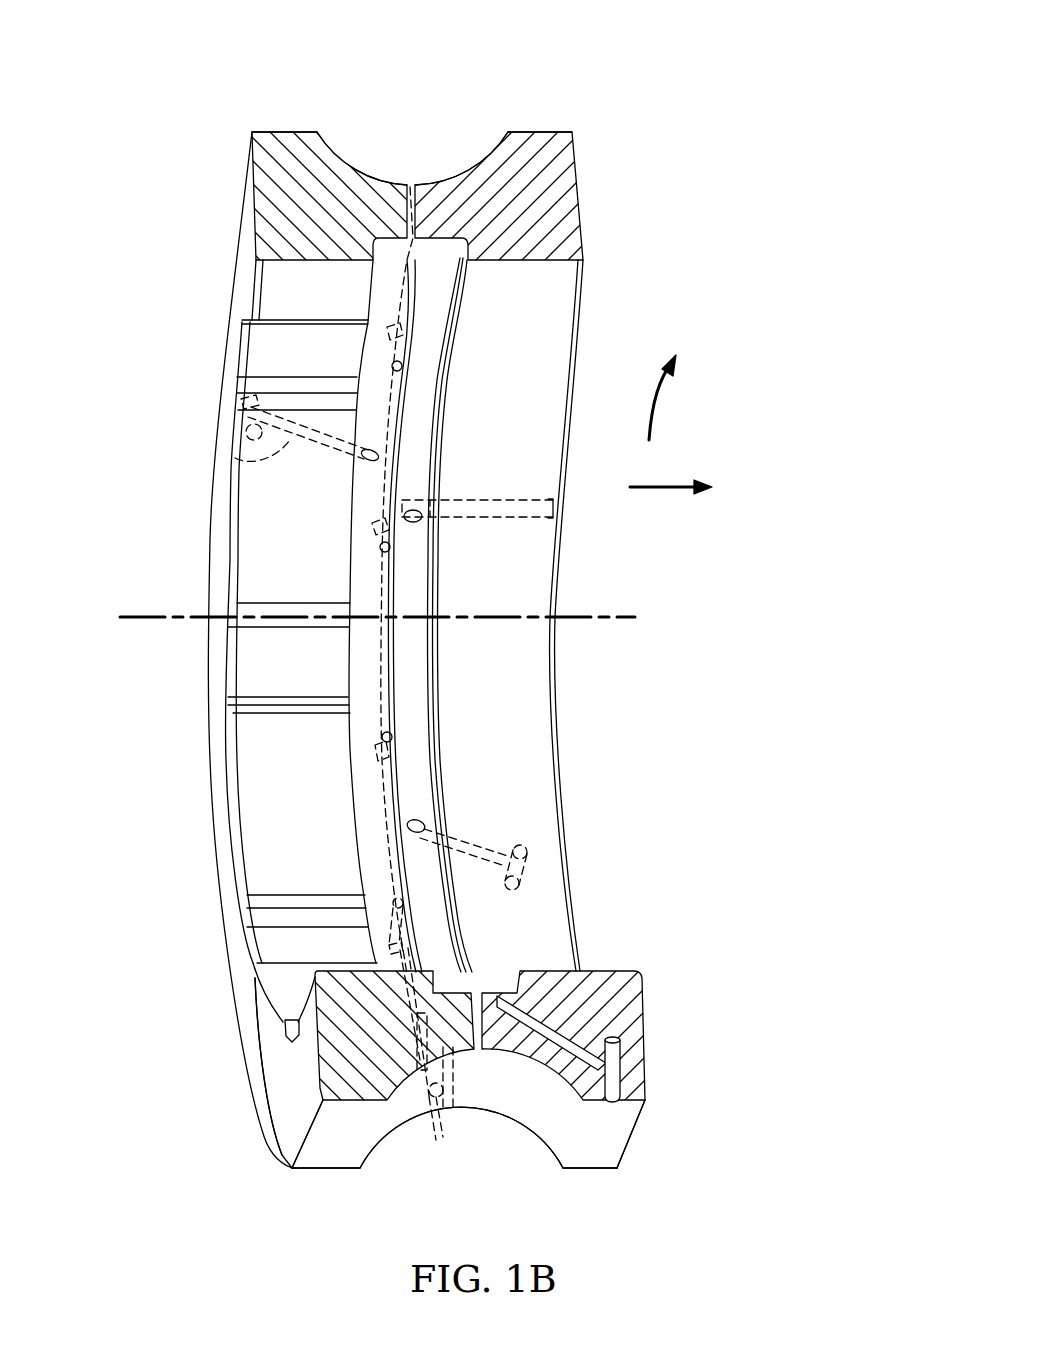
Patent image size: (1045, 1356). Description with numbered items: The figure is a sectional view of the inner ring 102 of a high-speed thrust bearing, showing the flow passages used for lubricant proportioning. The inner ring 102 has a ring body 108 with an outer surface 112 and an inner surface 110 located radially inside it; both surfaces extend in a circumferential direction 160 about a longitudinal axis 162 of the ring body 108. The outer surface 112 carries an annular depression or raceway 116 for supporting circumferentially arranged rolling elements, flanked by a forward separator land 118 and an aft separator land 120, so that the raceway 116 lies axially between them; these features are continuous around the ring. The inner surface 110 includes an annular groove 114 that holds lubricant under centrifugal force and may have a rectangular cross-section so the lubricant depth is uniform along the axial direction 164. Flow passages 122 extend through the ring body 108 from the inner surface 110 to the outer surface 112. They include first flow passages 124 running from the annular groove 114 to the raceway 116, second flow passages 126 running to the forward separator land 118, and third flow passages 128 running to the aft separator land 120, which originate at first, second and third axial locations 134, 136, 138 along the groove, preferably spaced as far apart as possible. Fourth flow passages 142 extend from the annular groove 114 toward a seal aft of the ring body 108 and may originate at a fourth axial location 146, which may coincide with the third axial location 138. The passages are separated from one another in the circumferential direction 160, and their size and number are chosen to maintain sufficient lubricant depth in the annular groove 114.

The inner ring 102 is at (745, 48).
The ring body 108 is at (576, 200).
The inner surface 110 is at (283, 262).
The outer surface 112 is at (453, 649).
The annular groove 114 is at (477, 307).
The raceway 116 is at (352, 167).
The forward separator land 118 is at (280, 130).
The aft separator land 120 is at (543, 133).
The flow passages 122 is at (427, 601).
The first set of flow passages 124 is at (413, 185).
The second flow passages 126 is at (240, 455).
The third flow passages 128 is at (483, 840).
The first axial location 134 is at (398, 368).
The second axial location 136 is at (373, 460).
The third axial location 138 is at (410, 823).
The fourth flow passages 142 is at (493, 497).
The fourth axial location 146 is at (410, 522).
The circumferential direction 160 is at (655, 418).
The longitudinal axis 162 is at (150, 613).
The axial direction 164 is at (650, 490).